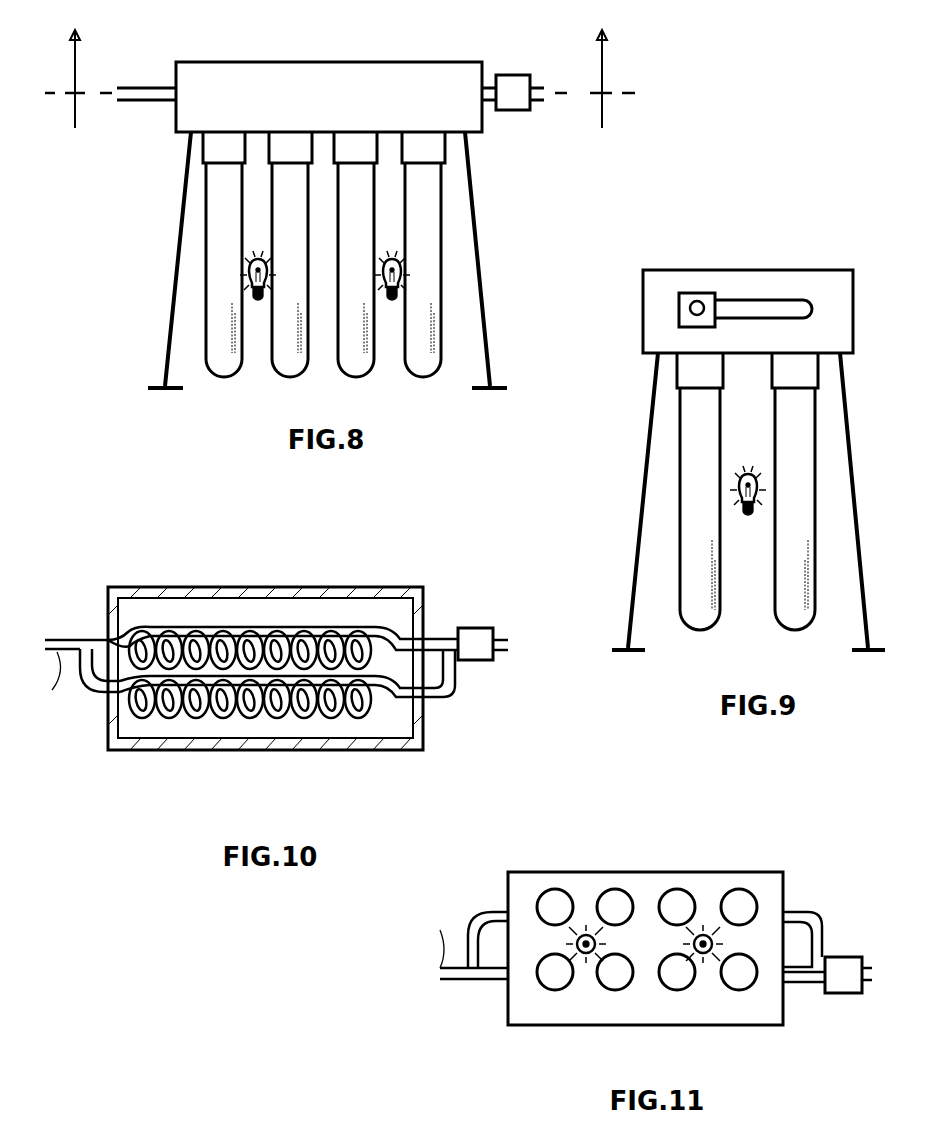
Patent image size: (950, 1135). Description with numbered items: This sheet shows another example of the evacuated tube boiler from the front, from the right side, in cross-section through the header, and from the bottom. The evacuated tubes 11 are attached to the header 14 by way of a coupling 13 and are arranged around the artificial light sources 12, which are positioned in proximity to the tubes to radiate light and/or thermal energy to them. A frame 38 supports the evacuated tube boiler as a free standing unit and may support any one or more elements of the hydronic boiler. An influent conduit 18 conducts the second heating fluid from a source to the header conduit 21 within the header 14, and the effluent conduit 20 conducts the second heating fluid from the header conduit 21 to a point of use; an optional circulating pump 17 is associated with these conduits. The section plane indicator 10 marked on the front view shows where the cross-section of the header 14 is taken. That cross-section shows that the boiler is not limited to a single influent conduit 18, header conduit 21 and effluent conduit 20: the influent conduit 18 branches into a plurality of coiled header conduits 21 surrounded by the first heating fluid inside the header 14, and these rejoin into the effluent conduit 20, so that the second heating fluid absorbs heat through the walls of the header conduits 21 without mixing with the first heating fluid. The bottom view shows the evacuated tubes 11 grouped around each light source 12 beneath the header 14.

In FIG. 8, the section line indicator for FIG. 10 is at (338, 79).
In FIG. 8, the evacuated tubes 11 is at (206, 222).
In FIG. 9, the evacuated tubes 11 is at (790, 603).
In FIG. 11, the evacuated tubes 11 is at (555, 890).
In FIG. 8, the light sources 12 is at (266, 256).
In FIG. 9, the light sources 12 is at (748, 465).
In FIG. 11, the light sources 12 is at (583, 956).
In FIG. 8, the coupling 13 is at (437, 150).
In FIG. 9, the coupling 13 is at (688, 372).
In FIG. 8, the header 14 is at (306, 62).
In FIG. 9, the header 14 is at (795, 270).
In FIG. 10, the header 14 is at (322, 587).
In FIG. 11, the header 14 is at (650, 872).
In FIG. 8, the circulating pump 17 is at (512, 75).
In FIG. 9, the circulating pump 17 is at (679, 310).
In FIG. 10, the circulating pump 17 is at (480, 628).
In FIG. 11, the circulating pump 17 is at (843, 994).
In FIG. 8, the influent conduit 18 is at (137, 88).
In FIG. 10, the influent conduit 18 is at (78, 690).
In FIG. 11, the influent conduit 18 is at (468, 928).
In FIG. 8, the effluent conduit 20 is at (545, 100).
In FIG. 9, the effluent conduit 20 is at (730, 302).
In FIG. 10, the effluent conduit 20 is at (450, 686).
In FIG. 11, the effluent conduit 20 is at (822, 915).
In FIG. 10, the header conduit 21 is at (170, 630).
In FIG. 8, the frame 38 is at (173, 283).
In FIG. 9, the frame 38 is at (641, 509).